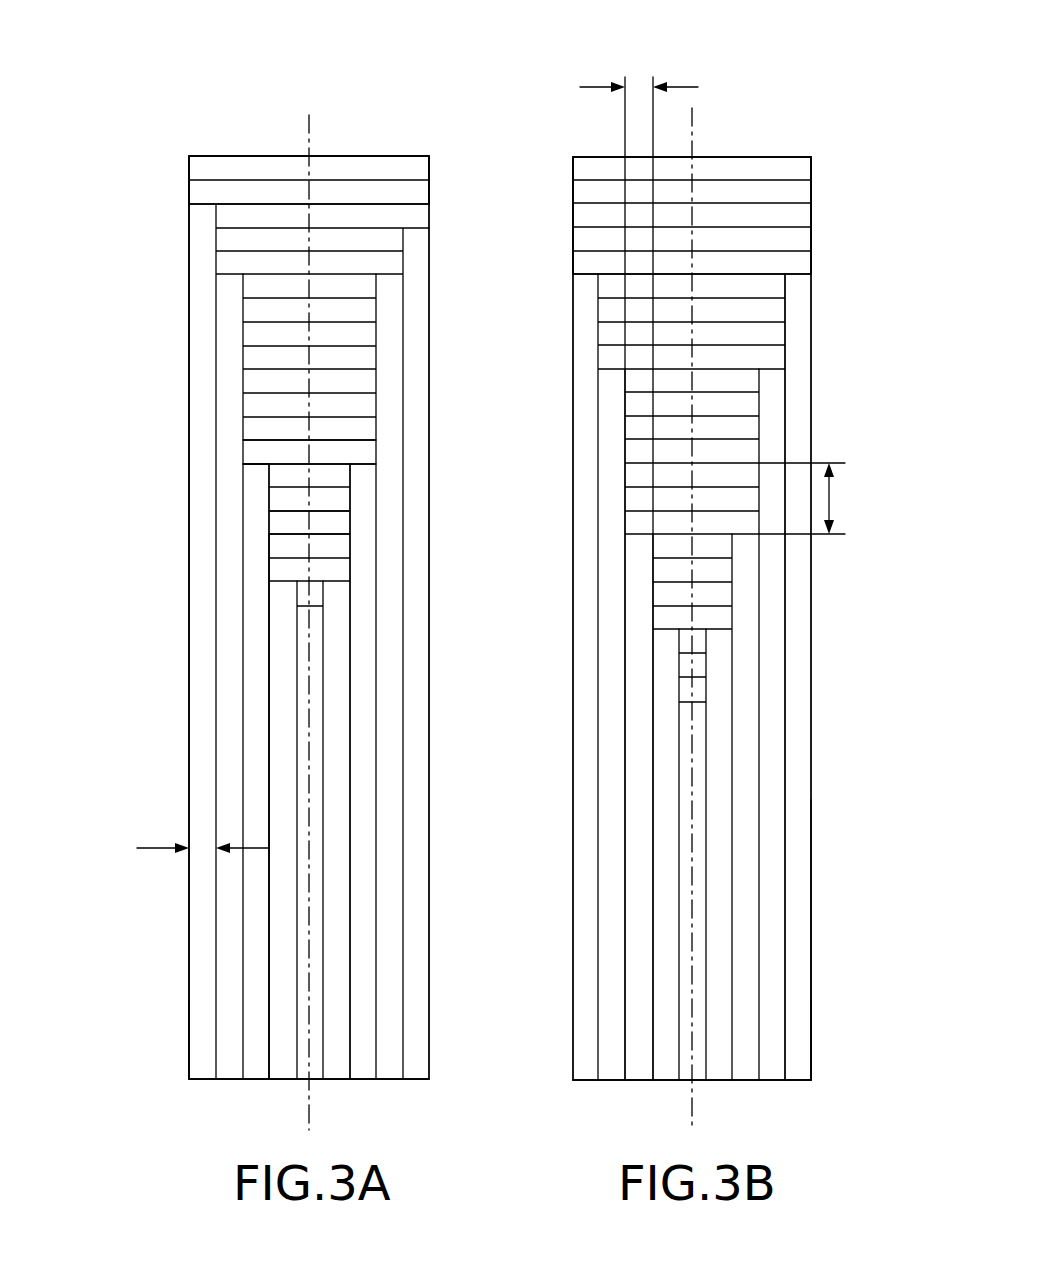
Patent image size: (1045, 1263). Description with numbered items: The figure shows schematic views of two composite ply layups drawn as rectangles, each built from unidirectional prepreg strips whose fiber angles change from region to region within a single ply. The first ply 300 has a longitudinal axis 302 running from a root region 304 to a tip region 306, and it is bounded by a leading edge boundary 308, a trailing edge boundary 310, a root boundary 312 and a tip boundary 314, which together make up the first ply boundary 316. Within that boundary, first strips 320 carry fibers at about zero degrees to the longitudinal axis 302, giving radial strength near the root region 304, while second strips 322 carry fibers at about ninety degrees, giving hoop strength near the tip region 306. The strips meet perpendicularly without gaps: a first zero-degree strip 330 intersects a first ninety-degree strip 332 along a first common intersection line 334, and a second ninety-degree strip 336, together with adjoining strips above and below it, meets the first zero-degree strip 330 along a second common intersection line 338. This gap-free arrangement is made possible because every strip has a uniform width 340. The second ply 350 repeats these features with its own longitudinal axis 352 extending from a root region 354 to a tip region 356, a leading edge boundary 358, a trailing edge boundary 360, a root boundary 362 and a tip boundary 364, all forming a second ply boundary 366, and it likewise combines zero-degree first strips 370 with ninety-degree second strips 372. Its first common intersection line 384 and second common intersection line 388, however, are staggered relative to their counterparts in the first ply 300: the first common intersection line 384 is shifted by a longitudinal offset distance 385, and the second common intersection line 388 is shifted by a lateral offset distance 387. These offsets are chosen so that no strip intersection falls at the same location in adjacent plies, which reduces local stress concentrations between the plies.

In FIG. 3A, the first ply 300 is at (160, 122).
In FIG. 3A, the longitudinal axis 302 is at (310, 120).
In FIG. 3A, the root region 304 is at (140, 1046).
In FIG. 3A, the tip region 306 is at (158, 190).
In FIG. 3A, the leading edge boundary 308 is at (189, 546).
In FIG. 3A, the trailing edge boundary 310 is at (430, 593).
In FIG. 3A, the root boundary 312 is at (362, 1082).
In FIG. 3A, the tip boundary 314 is at (365, 168).
In FIG. 3A, the first ply boundary 316 is at (188, 965).
In FIG. 3A, the first strips 320 is at (203, 760).
In FIG. 3A, the second strips 322 is at (255, 332).
In FIG. 3A, the first zero-degree strip 330 is at (257, 495).
In FIG. 3A, the first ninety-degree strip 332 is at (263, 454).
In FIG. 3A, the first common intersection line 334 is at (258, 465).
In FIG. 3A, the second ninety-degree strip 336 is at (338, 521).
In FIG. 3A, the second common intersection line 338 is at (268, 547).
In FIG. 3A, the width 340 is at (153, 848).
In FIG. 3B, the second ply 350 is at (848, 140).
In FIG. 3B, the longitudinal axis 352 is at (692, 125).
In FIG. 3B, the root region 354 is at (836, 1057).
In FIG. 3B, the tip region 356 is at (836, 168).
In FIG. 3B, the leading edge boundary 358 is at (573, 703).
In FIG. 3B, the trailing edge boundary 360 is at (812, 564).
In FIG. 3B, the root boundary 362 is at (773, 1081).
In FIG. 3B, the tip boundary 364 is at (728, 157).
In FIG. 3B, the second ply boundary 366 is at (812, 978).
In FIG. 3B, the first strips 370 is at (795, 808).
In FIG. 3B, the second strips 372 is at (768, 331).
In FIG. 3B, the first common intersection line 384 is at (640, 535).
In FIG. 3B, the longitudinal offset distance 385 is at (829, 500).
In FIG. 3B, the lateral offset distance 387 is at (593, 87).
In FIG. 3B, the second common intersection line 388 is at (626, 452).